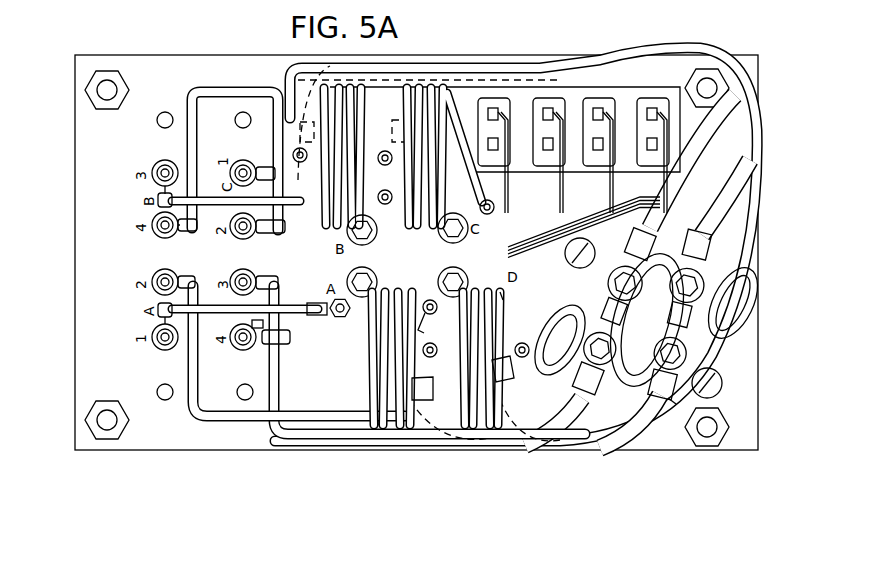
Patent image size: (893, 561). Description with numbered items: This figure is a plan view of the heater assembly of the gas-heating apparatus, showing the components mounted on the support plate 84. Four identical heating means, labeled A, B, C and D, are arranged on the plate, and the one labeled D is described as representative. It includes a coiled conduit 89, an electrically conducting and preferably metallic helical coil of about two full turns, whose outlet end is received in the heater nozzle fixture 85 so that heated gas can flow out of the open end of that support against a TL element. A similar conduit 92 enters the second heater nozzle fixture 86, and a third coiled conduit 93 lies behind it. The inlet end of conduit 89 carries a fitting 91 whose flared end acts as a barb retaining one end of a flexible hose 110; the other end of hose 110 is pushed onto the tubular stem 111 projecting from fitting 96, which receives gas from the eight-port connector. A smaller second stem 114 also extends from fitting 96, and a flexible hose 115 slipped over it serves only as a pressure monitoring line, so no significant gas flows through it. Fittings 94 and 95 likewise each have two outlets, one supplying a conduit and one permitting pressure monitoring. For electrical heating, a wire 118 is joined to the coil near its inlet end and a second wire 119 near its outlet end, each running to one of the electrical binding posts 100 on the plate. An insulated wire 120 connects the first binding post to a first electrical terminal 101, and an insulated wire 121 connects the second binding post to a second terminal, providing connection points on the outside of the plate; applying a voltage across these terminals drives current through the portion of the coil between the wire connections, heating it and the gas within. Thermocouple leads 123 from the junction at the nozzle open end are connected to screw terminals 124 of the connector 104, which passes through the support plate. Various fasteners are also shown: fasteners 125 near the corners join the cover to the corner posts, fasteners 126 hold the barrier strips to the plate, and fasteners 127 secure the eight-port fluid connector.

The support plate 84 is at (98, 307).
The heater nozzle fixture 85 is at (443, 290).
The heater nozzle fixture 86 is at (347, 276).
The conduit 89 is at (500, 290).
The fitting 91 is at (513, 437).
The conduit 92 is at (367, 367).
The coiled conduit 93 is at (320, 227).
The fitting 94 is at (588, 248).
The fitting 95 is at (590, 365).
The fitting 96 is at (688, 355).
The electrical binding posts 100 is at (545, 328).
The electrical terminals 101 is at (160, 162).
The connector 104 is at (660, 140).
The flexible hose 110 is at (620, 432).
The tubular stem 111 is at (680, 398).
The second stem 114 is at (740, 322).
The flexible hose 115 is at (742, 262).
The wire 118 is at (495, 352).
The second wire 119 is at (430, 302).
The insulated wire 120 is at (300, 445).
The insulated wire 121 is at (285, 382).
The thermocouple leads 123 is at (623, 194).
The screw terminals 124 is at (658, 115).
The fasteners 125 is at (110, 426).
The fasteners 126 is at (239, 388).
The fasteners 127 is at (718, 393).